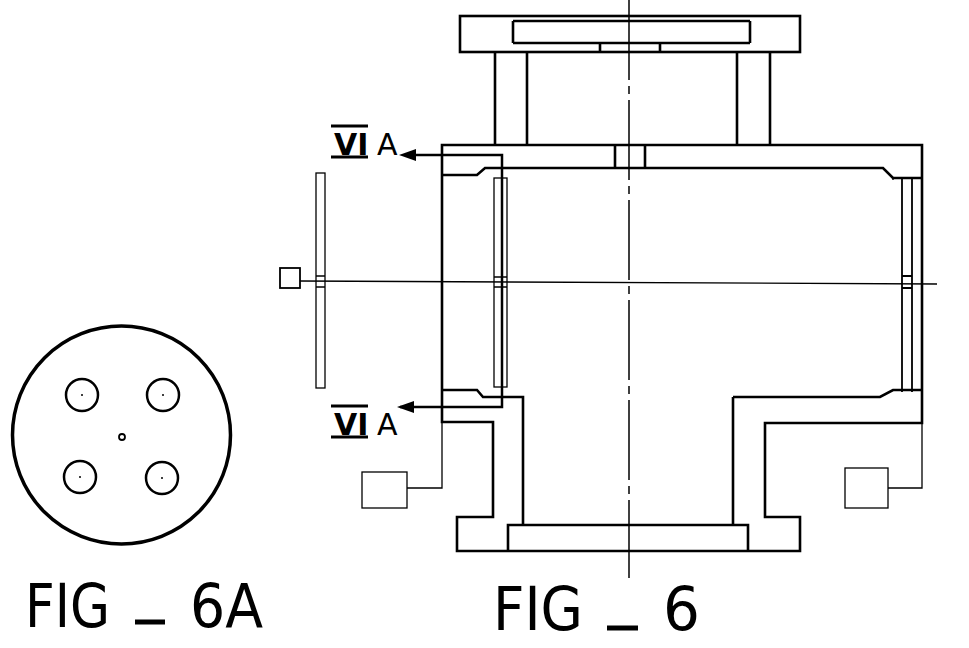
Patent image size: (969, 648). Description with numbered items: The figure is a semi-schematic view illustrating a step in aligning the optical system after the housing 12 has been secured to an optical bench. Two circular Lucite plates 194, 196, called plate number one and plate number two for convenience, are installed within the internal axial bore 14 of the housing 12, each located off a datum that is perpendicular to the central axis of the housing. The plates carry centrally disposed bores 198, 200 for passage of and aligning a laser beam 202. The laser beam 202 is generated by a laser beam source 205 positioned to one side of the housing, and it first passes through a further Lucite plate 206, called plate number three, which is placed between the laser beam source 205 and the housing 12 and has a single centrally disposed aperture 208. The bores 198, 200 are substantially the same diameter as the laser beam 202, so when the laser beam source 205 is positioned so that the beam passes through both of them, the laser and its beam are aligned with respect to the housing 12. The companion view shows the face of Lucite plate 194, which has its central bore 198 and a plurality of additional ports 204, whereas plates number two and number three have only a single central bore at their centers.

In FIG. 6, the housing 12 is at (835, 145).
In FIG. 6, the internal axial bore 14 is at (893, 181).
In FIG. 6, the Lucite plate 194 is at (507, 337).
In FIG. 6A, the Lucite plate 194 is at (147, 364).
In FIG. 6, the Lucite plate 196 is at (900, 336).
In FIG. 6, the bore 198 is at (507, 280).
In FIG. 6A, the bore 198 is at (124, 433).
In FIG. 6, the bore 200 is at (903, 278).
In FIG. 6, the laser beam 202 is at (387, 284).
In FIG. 6A, the additional ports 204 is at (173, 398).
In FIG. 6, the laser beam source 205 is at (285, 268).
In FIG. 6, the Lucite plate 206 is at (326, 208).
In FIG. 6, the aperture 208 is at (327, 279).